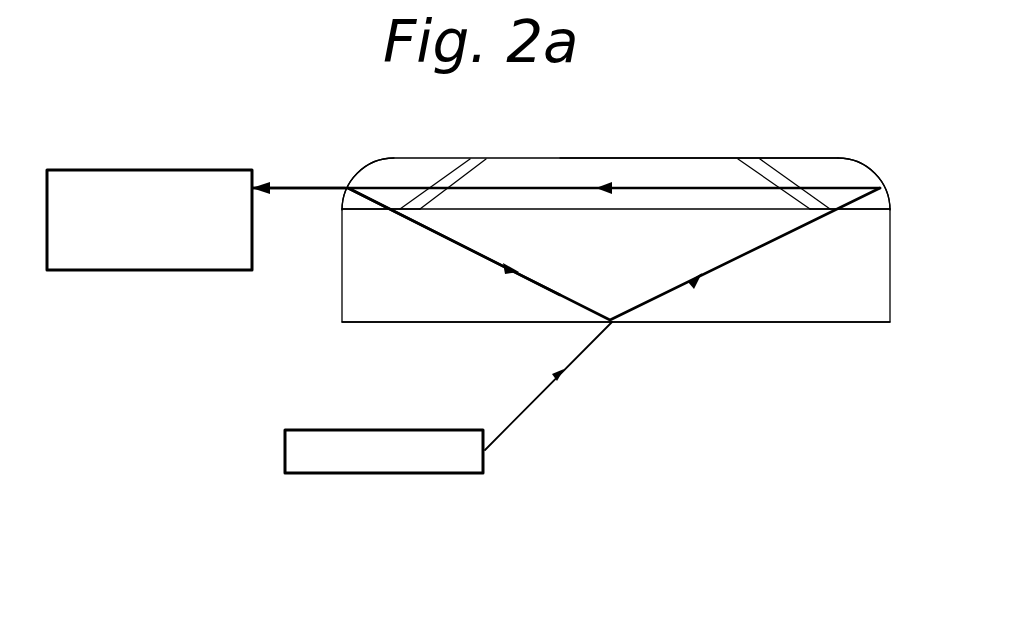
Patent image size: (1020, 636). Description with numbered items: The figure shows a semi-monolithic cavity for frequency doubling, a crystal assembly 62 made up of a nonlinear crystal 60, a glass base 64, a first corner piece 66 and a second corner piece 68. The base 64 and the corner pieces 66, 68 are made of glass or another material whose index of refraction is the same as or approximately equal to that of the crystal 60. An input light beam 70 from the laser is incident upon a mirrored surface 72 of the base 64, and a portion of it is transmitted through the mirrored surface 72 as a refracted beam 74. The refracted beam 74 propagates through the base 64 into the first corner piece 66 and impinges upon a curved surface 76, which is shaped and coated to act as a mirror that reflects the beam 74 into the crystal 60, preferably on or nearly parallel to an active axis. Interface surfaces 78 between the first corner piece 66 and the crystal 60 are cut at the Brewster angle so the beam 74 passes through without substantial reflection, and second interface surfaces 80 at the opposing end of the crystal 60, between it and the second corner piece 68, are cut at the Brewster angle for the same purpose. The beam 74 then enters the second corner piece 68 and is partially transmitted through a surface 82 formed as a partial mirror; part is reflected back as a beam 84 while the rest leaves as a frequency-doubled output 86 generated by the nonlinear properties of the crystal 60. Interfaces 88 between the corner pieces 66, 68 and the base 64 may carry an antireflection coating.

The nonlinear crystal 60 is at (635, 163).
The crystal assembly 62 is at (256, 422).
The glass base 64 is at (873, 303).
The first corner piece 66 is at (800, 165).
The second corner piece 68 is at (390, 158).
The input light beam 70 is at (535, 402).
The mirrored surface 72 is at (808, 322).
The refracted beam 74 is at (549, 188).
The curved surface 76 is at (862, 168).
The interface surfaces 78 is at (743, 160).
The second interface surfaces 80 is at (476, 167).
The surface 82 is at (362, 172).
The reflected beam 84 is at (540, 283).
The frequency-doubled output 86 is at (290, 189).
The interfaces 88 is at (358, 212).